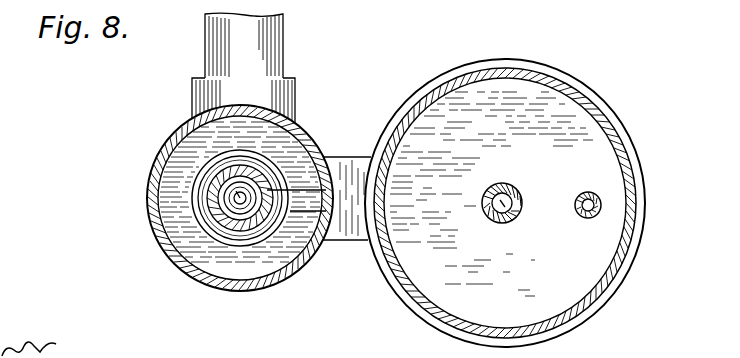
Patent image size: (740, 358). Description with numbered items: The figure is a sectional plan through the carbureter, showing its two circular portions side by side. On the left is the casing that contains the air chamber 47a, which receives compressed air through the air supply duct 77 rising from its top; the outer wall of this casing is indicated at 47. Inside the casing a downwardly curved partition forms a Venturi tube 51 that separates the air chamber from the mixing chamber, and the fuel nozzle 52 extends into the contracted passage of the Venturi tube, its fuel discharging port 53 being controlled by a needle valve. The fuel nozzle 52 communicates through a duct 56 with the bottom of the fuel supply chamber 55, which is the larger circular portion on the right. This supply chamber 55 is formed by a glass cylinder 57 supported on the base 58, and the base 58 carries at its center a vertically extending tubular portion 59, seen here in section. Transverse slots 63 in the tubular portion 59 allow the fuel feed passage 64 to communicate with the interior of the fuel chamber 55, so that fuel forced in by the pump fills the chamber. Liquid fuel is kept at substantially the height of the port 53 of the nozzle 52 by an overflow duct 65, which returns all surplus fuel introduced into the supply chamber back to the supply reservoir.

The air supply duct 77 is at (283, 57).
The outer rim of drum 47 is at (180, 127).
The air chamber 47a is at (182, 166).
The Venturi tube 51 is at (207, 193).
The fuel nozzle 52 is at (223, 233).
The fuel discharging port 53 is at (212, 219).
The duct 56 is at (388, 199).
The fuel supply chamber 55 is at (597, 130).
The base 58 is at (632, 150).
The glass cylinder 57 is at (635, 207).
The tubular portion 59 is at (495, 217).
The transverse slots 63 is at (511, 196).
The fuel feed passage 64 is at (504, 207).
The overflow duct 65 is at (588, 211).